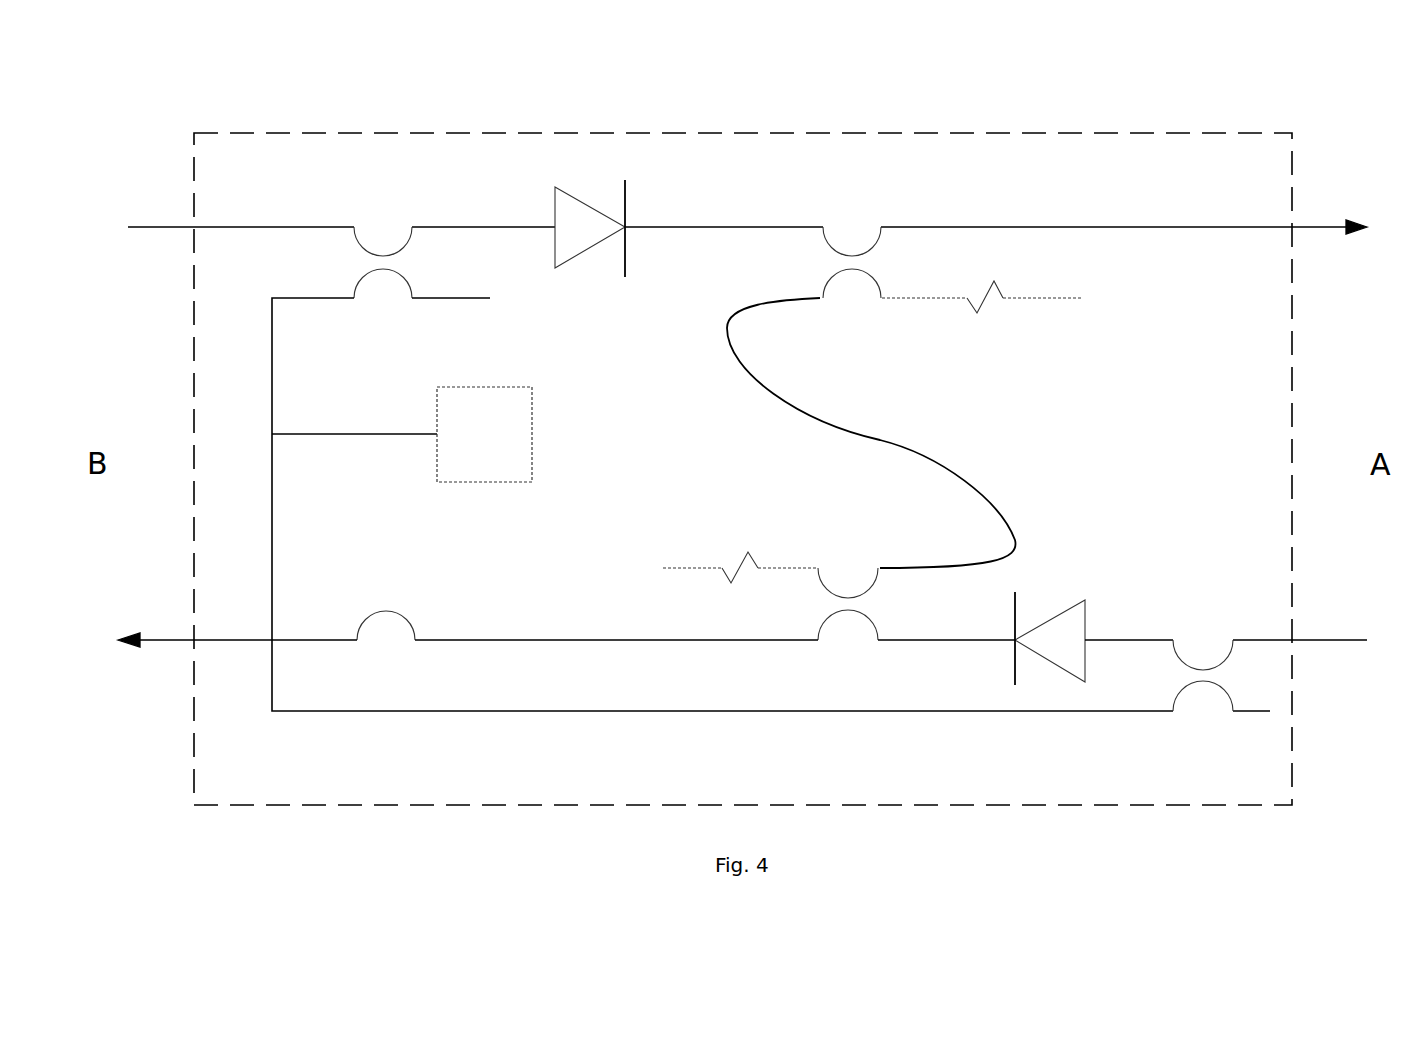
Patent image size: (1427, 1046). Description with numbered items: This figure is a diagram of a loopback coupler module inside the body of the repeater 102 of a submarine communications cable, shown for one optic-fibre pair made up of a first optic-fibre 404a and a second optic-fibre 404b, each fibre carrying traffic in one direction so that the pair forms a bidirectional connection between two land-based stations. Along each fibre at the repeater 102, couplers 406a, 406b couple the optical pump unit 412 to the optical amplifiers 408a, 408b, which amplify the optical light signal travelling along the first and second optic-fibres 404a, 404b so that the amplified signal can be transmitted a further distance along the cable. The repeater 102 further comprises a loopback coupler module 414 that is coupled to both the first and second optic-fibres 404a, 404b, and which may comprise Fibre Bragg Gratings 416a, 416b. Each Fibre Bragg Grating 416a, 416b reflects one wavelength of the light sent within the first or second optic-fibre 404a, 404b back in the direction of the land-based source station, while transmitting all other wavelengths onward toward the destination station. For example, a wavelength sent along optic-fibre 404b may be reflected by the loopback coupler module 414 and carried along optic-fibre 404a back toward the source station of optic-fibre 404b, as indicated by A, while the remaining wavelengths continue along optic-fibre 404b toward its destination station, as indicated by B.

The repeater 102 is at (1320, 140).
The first optic-fibre 404a is at (1356, 231).
The second optic-fibre 404b is at (1367, 641).
The coupler 406a is at (360, 244).
The coupler 406b is at (1222, 662).
The optical amplifier 408a is at (636, 166).
The optical amplifier 408b is at (1087, 615).
The optical pump unit 412 is at (532, 431).
The loopback coupler module 414 is at (1082, 298).
The Fibre Bragg Grating 416a is at (977, 312).
The Fibre Bragg Grating 416b is at (730, 578).